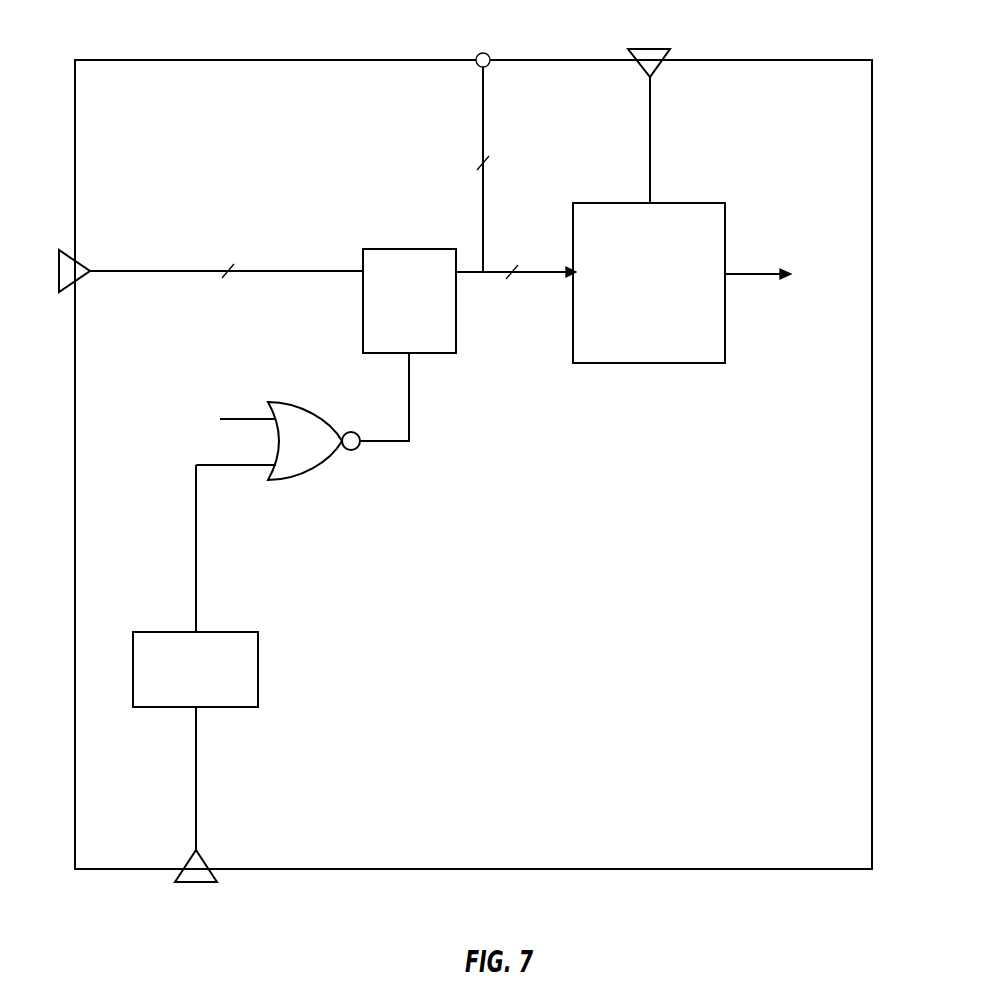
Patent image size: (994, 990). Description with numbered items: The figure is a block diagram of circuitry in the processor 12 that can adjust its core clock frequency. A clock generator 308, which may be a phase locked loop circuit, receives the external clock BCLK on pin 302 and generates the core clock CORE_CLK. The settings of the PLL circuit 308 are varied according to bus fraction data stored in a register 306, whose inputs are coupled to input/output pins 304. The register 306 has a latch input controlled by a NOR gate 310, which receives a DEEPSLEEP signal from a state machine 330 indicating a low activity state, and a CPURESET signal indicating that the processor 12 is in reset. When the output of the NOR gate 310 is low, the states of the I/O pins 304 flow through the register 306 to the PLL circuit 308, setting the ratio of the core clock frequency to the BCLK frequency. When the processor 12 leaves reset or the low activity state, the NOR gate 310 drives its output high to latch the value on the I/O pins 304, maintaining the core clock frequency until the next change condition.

The processor 12 is at (163, 124).
The pin 302 is at (657, 67).
The input/output pins 304 is at (78, 263).
The register 306 is at (413, 248).
The clock generator 308 is at (630, 351).
The NOR gate 310 is at (305, 407).
The state machine 330 is at (237, 631).